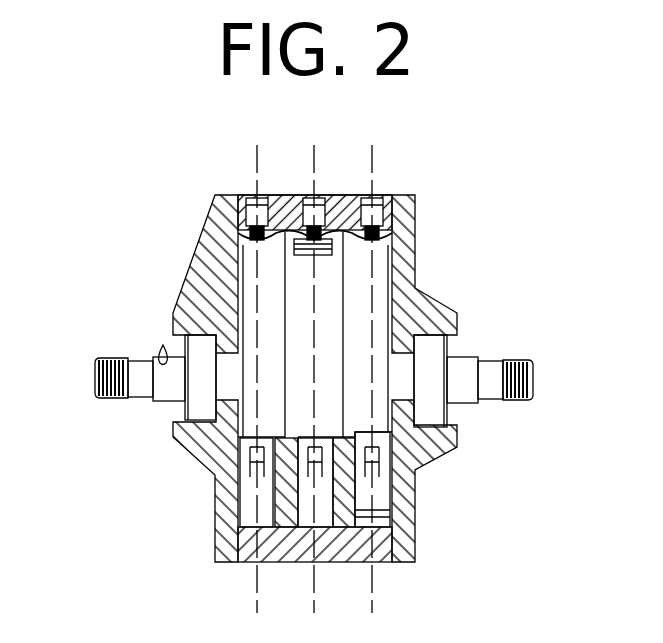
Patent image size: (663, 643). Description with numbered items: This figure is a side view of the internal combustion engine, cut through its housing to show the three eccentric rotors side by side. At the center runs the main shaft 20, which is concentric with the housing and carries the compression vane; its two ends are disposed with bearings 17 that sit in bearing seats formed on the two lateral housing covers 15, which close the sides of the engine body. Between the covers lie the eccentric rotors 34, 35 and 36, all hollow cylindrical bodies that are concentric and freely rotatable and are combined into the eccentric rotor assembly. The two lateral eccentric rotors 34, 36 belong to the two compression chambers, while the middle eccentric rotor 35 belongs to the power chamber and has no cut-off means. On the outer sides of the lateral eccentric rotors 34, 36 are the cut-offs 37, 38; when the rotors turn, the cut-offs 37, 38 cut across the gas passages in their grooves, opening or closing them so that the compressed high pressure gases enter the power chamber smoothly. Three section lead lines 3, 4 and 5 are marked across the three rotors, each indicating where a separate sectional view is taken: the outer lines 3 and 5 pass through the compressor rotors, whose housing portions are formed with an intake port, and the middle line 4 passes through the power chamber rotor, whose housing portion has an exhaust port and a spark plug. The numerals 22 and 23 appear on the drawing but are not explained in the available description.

The lateral housing cover 15 is at (177, 312).
The bearing 17 is at (193, 417).
The main shaft 20 is at (142, 360).
The cover cap with gasket 22 is at (246, 246).
The bottom disc element 23 is at (385, 515).
The eccentric rotor 34 is at (250, 290).
The eccentric rotor 35 is at (330, 300).
The eccentric rotor 36 is at (457, 318).
The cut-off 37 is at (285, 425).
The cut-off 38 is at (343, 400).
The lead line 3— 3 is at (243, 167).
The lead line 4— 4 is at (300, 167).
The lead line 5— 5 is at (357, 167).